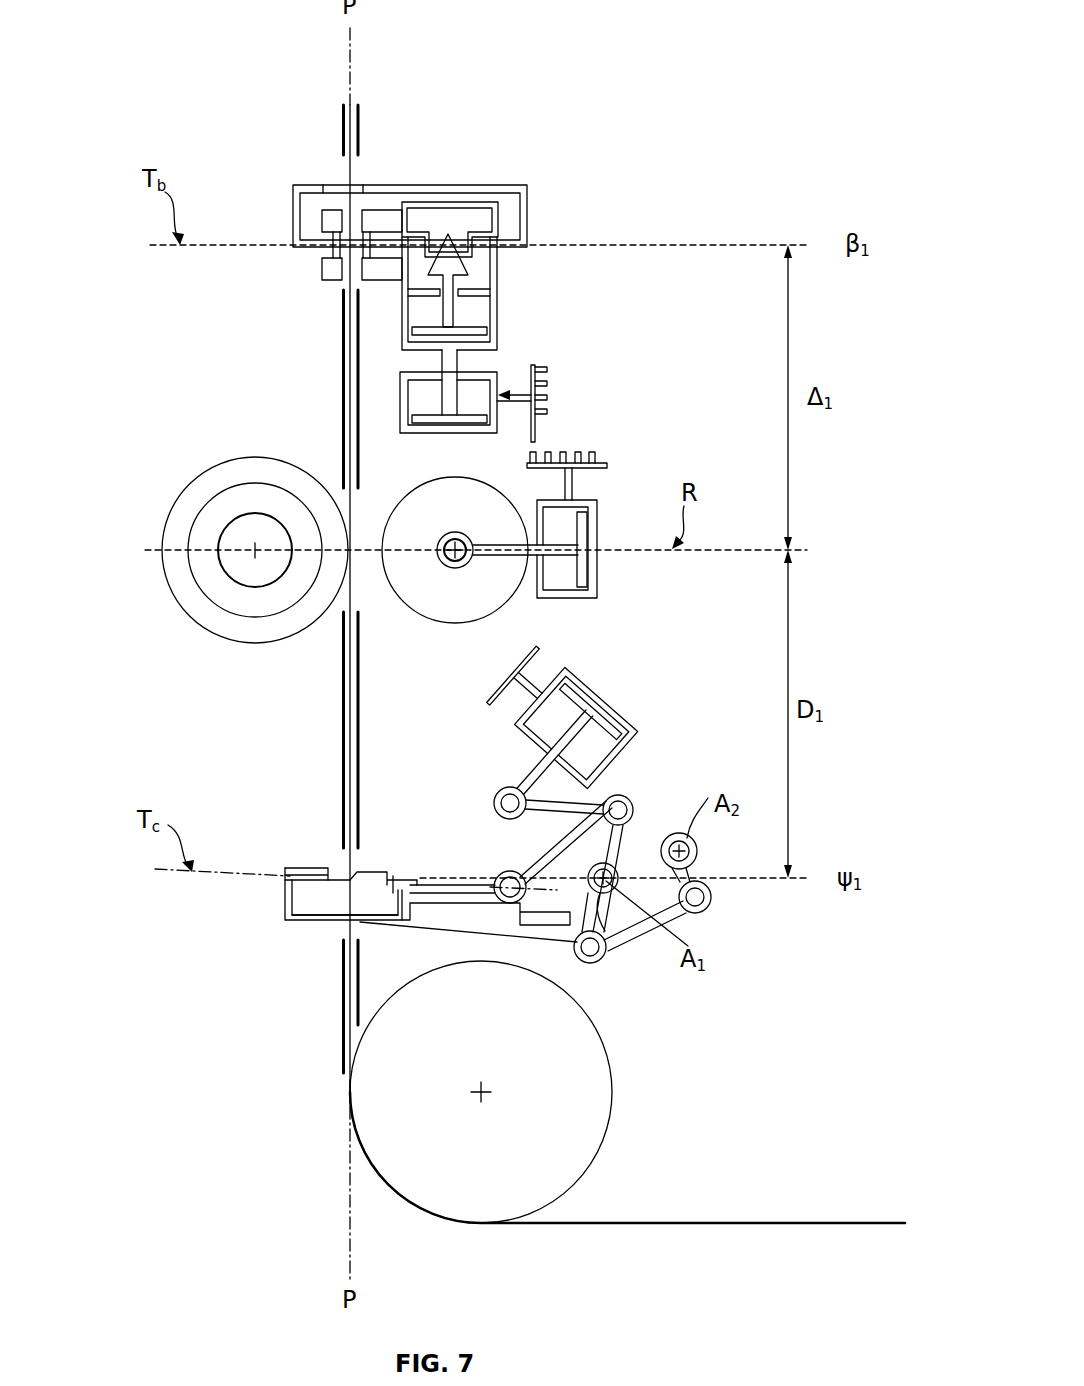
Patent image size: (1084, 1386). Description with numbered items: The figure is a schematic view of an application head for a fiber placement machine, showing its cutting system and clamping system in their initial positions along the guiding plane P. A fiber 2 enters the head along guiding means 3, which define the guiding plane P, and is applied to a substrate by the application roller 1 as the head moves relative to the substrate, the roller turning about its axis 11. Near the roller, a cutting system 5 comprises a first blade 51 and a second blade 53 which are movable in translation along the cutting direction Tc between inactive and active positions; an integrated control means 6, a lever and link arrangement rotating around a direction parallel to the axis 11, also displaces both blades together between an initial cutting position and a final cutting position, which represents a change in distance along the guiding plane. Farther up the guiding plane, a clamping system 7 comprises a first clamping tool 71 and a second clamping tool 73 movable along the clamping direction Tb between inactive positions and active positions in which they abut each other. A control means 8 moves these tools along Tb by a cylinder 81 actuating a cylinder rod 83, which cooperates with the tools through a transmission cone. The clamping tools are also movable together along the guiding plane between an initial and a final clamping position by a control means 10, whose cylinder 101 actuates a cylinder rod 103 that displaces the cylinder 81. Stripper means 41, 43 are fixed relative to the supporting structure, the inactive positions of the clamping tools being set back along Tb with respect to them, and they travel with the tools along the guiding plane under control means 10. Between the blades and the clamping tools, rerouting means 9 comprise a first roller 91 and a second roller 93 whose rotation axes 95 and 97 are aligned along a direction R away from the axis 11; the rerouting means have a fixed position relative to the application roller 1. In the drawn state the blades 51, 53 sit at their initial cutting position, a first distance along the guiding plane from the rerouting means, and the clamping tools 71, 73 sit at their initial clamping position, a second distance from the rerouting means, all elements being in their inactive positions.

The application roller 1 is at (585, 1028).
The fiber 2 is at (348, 170).
The guiding means 3 is at (340, 120).
The cutting system 5 is at (272, 910).
The integrated control means 6 is at (648, 781).
The clamping system 7 is at (286, 212).
The control means 8 is at (540, 213).
The rerouting means 9 is at (160, 515).
The control means 10 is at (542, 395).
The axis 11 is at (488, 1092).
The stripper means 41 is at (375, 208).
The stripper means 43 is at (330, 272).
The first blade 51 is at (330, 883).
The second blade 53 is at (370, 872).
The first clamping tool 71 is at (372, 232).
The second clamping tool 73 is at (327, 253).
The cylinder 81 is at (497, 275).
The cylinder rod 83 is at (455, 318).
The first roller 91 is at (473, 605).
The second roller 93 is at (220, 473).
The rotation axis 95 is at (450, 556).
The rotation axis 97 is at (255, 552).
The cylinder 101 is at (492, 380).
The cylinder rod 103 is at (445, 398).